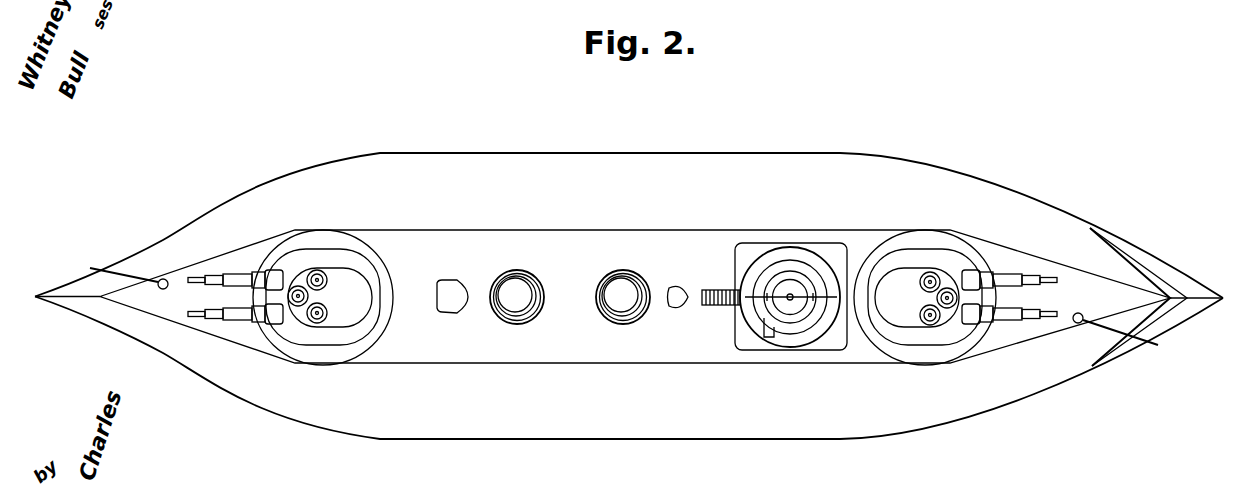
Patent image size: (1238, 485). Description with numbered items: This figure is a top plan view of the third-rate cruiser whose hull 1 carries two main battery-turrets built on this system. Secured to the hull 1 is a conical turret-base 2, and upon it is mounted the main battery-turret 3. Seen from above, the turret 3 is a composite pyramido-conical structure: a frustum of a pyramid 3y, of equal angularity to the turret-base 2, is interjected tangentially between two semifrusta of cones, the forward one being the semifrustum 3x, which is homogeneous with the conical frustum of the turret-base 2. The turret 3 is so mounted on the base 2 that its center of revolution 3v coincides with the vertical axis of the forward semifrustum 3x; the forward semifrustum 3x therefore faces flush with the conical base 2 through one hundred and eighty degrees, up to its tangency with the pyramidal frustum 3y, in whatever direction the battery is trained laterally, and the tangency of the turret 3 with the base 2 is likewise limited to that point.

The hull 1 is at (629, 296).
The turret-base 2 is at (925, 337).
The main battery-turret 3 is at (624, 297).
The center of revolution 3v is at (320, 297).
The forward semifrustum of cone 3x is at (378, 303).
The frustum of a pyramid 3y is at (327, 257).